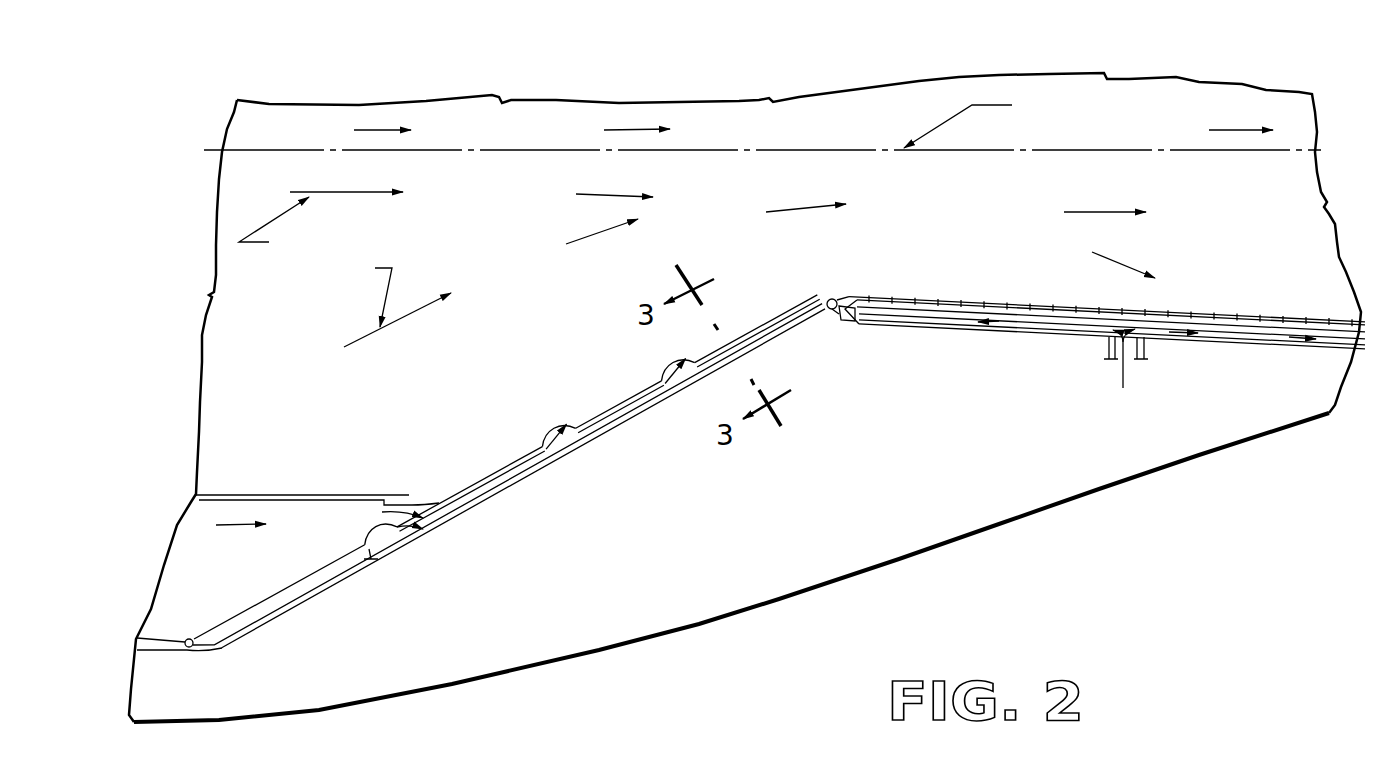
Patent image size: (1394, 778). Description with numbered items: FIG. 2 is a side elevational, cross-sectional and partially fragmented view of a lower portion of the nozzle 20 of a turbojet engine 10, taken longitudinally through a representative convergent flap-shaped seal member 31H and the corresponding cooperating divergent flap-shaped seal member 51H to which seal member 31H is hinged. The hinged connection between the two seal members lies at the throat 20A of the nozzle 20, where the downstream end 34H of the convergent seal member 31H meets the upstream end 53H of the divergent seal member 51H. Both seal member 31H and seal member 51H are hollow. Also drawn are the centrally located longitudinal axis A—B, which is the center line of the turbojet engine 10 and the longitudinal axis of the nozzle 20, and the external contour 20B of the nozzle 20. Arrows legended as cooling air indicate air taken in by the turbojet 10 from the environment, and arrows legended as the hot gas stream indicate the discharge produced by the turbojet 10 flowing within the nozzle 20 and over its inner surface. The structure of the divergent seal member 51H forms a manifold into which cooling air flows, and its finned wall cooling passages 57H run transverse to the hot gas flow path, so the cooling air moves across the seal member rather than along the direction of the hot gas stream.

The turbojet engine 10 is at (798, 75).
The nozzle 20 is at (1292, 257).
The throat of the nozzle 20A is at (843, 288).
The external contour of the nozzle 20B is at (836, 582).
The convergent flap-shaped seal member 31H is at (533, 481).
The downstream end of seal member 31H 34H is at (827, 292).
The divergent flap-shaped seal member 51H is at (991, 327).
The upstream end of seal member 51H 53H is at (848, 321).
The finned wall cooling passages 57H is at (959, 298).